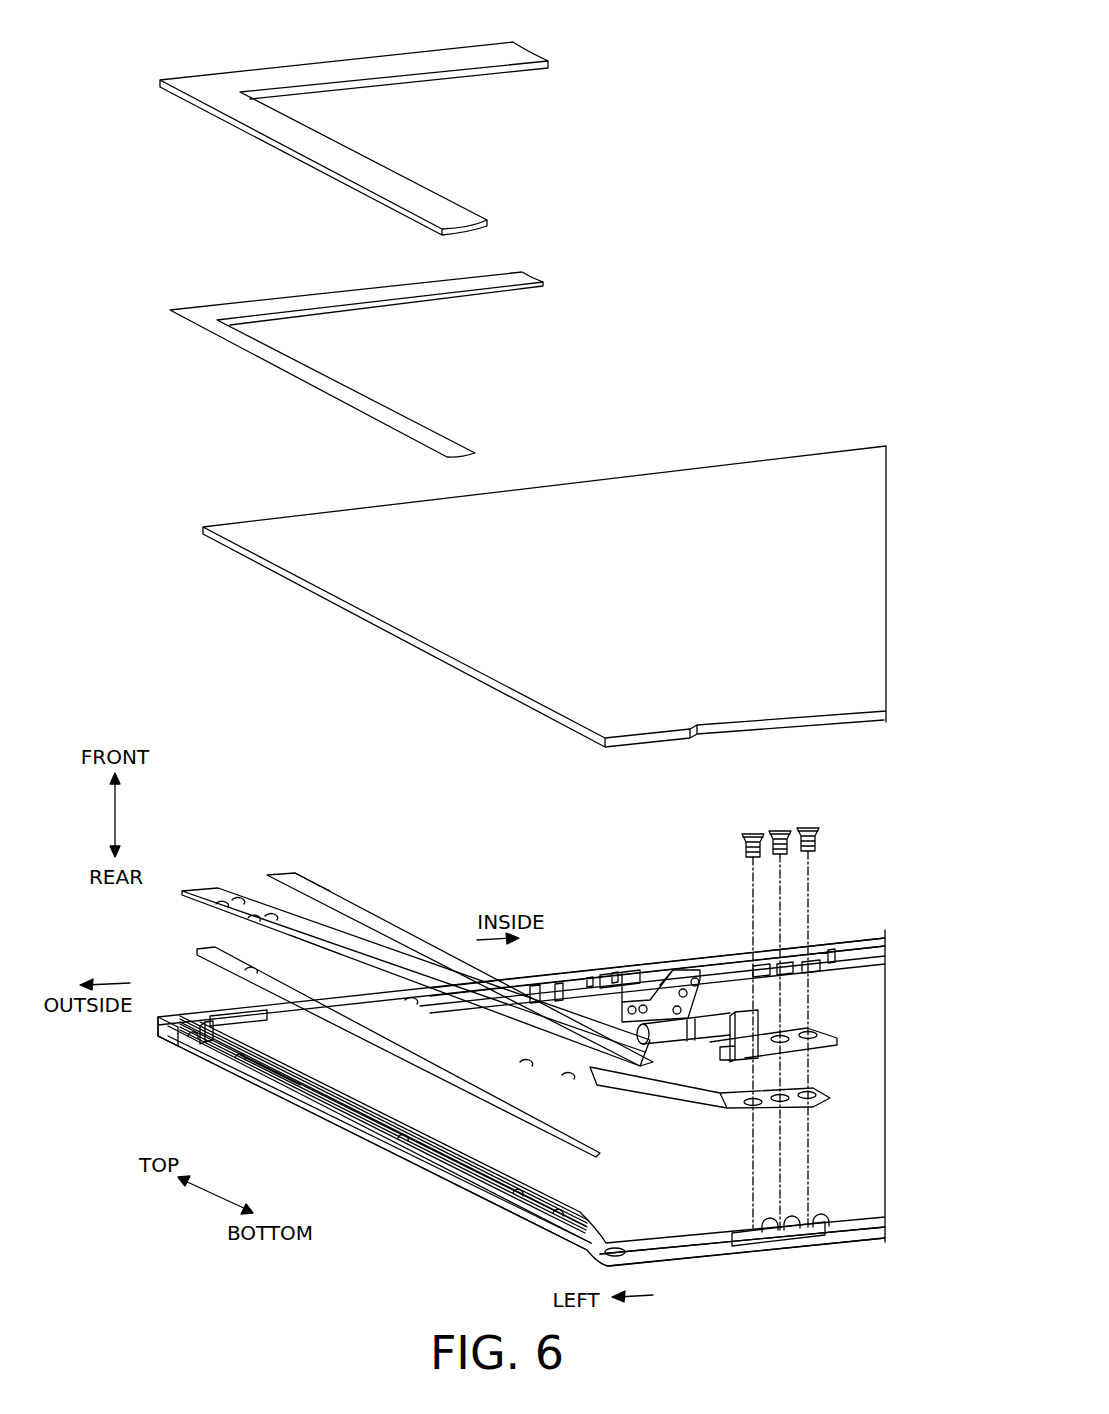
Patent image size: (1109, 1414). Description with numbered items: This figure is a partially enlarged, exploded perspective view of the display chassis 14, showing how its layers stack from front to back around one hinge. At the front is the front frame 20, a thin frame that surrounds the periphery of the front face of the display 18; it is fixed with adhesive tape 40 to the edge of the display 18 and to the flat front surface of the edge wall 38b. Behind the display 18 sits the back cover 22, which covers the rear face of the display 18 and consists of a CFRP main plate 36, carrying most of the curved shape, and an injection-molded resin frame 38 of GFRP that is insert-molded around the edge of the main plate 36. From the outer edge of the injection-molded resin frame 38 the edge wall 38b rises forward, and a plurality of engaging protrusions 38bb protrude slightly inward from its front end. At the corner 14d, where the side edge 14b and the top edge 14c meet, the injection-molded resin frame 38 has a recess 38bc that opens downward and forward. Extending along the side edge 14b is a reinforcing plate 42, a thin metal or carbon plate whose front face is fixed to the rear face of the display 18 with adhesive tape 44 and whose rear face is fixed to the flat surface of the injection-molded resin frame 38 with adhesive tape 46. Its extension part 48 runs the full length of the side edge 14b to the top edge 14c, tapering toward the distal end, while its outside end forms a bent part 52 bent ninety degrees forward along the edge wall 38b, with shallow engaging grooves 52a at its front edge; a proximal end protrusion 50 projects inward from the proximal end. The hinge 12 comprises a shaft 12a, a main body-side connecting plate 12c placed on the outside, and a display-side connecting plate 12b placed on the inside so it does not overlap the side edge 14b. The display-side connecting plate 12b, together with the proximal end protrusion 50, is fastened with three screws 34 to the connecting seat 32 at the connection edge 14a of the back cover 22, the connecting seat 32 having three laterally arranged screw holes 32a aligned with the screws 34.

The hinge 12 is at (790, 969).
The shaft 12a is at (717, 1027).
The display-side connecting plate 12b is at (830, 1053).
The main body-side connecting plate 12c is at (680, 973).
The display chassis 14 is at (695, 60).
The connection edge 14a is at (848, 1240).
The side edge 14b is at (317, 1125).
The top edge 14c is at (610, 970).
The corner 14d is at (167, 1017).
The display 18 is at (778, 498).
The front frame 20 is at (214, 88).
The back cover 22 is at (384, 1125).
The connecting seat 32 is at (740, 1245).
The screw holes 32a is at (820, 1236).
The screws 34 is at (808, 827).
The main plate 36 is at (465, 1148).
The injection-molded resin frame 38 is at (327, 1100).
The edge wall 38b is at (253, 1088).
The engaging protrusions 38bb is at (190, 1037).
The recess 38bc is at (193, 1025).
The adhesive tape 40 is at (197, 318).
The reinforcing plate 42 is at (205, 891).
The adhesive tape 44 is at (313, 890).
The adhesive tape 46 is at (257, 973).
The extension part 48 is at (322, 947).
The reinforcing plate 50 is at (737, 1110).
The bent part 52 is at (357, 983).
The engaging grooves 52a is at (253, 919).